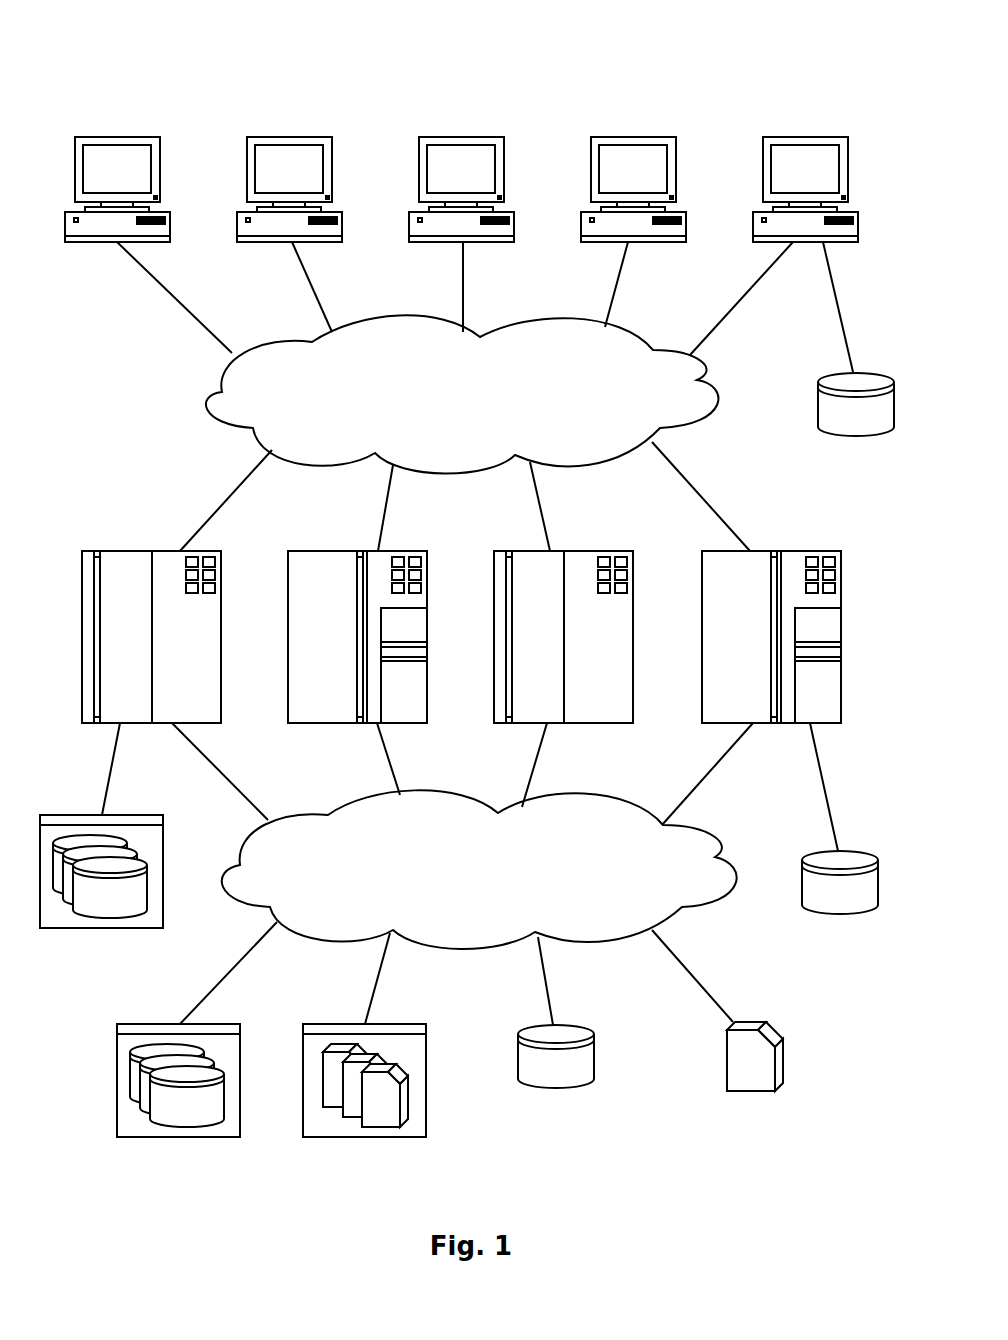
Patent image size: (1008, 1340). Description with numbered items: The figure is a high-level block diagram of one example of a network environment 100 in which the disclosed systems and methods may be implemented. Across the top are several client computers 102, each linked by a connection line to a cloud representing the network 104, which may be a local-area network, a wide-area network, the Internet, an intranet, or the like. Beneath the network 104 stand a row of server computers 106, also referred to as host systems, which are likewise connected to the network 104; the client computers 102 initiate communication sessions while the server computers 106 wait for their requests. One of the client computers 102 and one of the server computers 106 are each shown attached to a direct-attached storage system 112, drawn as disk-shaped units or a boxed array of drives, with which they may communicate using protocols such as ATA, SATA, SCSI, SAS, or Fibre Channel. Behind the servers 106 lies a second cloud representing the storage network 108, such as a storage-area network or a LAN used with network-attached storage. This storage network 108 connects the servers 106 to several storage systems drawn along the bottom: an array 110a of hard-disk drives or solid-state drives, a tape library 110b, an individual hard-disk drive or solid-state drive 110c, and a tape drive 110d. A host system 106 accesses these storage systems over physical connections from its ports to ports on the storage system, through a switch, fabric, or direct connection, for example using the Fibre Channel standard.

The network environment 100 is at (186, 68).
The client computer 102 is at (102, 178).
The network 104 is at (601, 406).
The server computer 106 is at (110, 643).
The storage network 108 is at (583, 881).
The array of hard-disk drives or solid-state drives 110a is at (178, 1138).
The tape library 110b is at (367, 1138).
The individual hard-disk drive or solid-state drive 110c is at (553, 1086).
The tape drive 110d is at (747, 1092).
The direct-attached storage system 112 is at (858, 436).